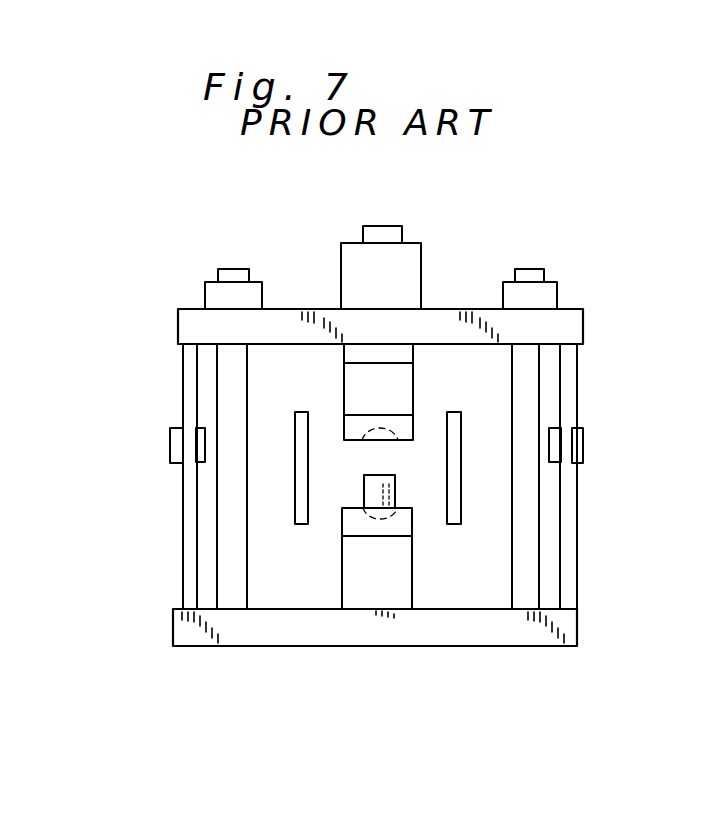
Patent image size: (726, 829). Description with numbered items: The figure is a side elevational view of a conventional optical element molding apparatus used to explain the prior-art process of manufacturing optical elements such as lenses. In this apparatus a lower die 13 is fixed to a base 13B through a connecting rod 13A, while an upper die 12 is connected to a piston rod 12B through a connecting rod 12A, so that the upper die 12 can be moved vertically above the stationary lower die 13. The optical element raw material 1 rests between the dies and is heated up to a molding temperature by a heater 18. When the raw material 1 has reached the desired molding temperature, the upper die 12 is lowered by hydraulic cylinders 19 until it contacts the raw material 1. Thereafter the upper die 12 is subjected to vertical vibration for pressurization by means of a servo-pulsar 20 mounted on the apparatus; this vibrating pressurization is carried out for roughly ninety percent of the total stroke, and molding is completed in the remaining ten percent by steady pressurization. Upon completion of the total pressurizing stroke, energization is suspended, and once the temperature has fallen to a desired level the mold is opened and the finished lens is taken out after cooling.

The optical element raw material 1 is at (384, 483).
The upper die 12 is at (396, 392).
The connecting rod 12A is at (391, 393).
The piston rod 12B is at (395, 355).
The lower die 13 is at (395, 527).
The connecting rod 13A is at (362, 576).
The base 13B is at (492, 633).
The heater 18 is at (455, 488).
The hydraulic cylinders 19 is at (175, 445).
The servo-pulsar 20 is at (412, 271).